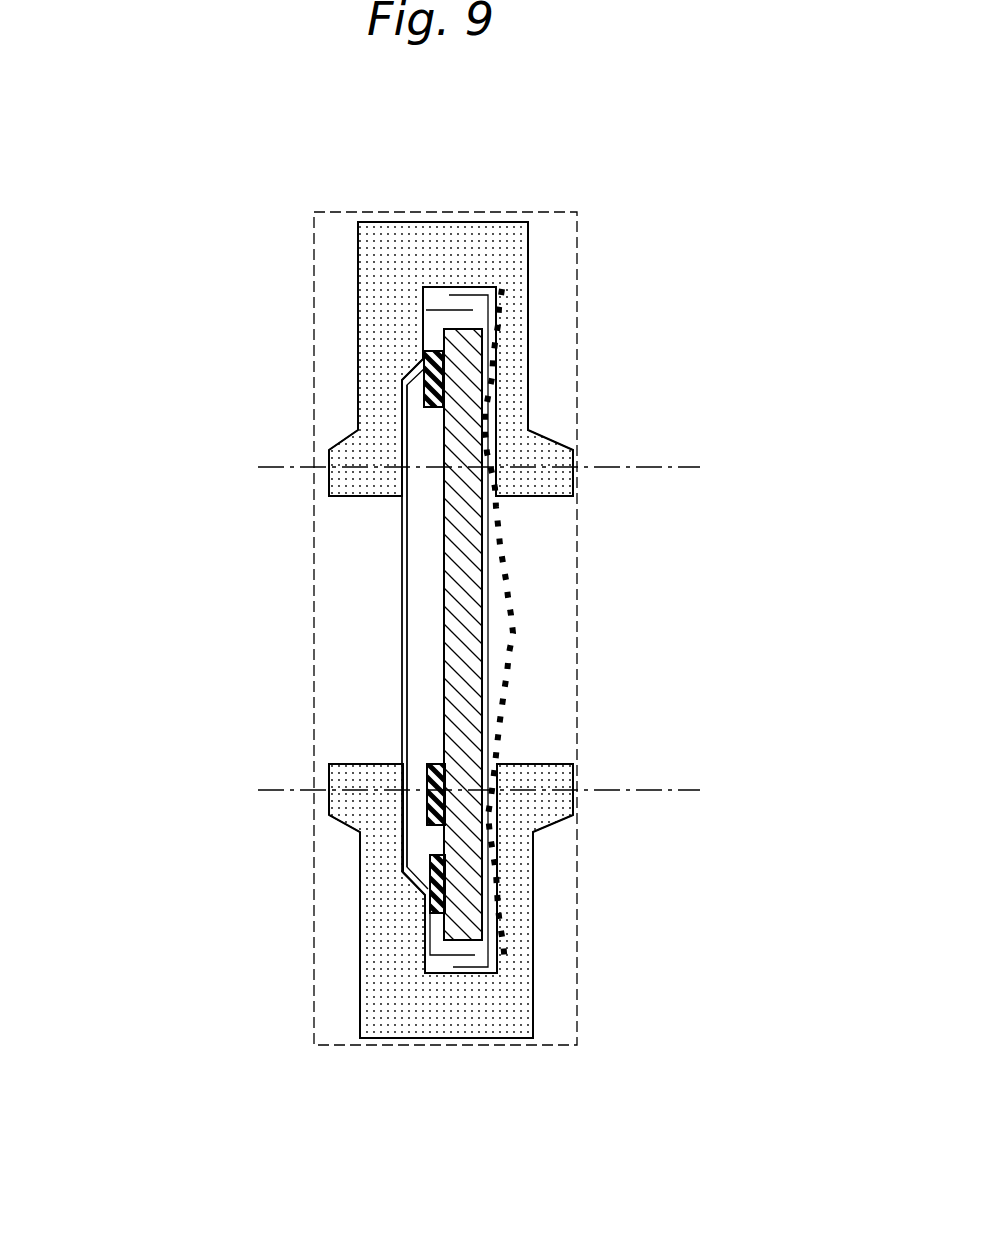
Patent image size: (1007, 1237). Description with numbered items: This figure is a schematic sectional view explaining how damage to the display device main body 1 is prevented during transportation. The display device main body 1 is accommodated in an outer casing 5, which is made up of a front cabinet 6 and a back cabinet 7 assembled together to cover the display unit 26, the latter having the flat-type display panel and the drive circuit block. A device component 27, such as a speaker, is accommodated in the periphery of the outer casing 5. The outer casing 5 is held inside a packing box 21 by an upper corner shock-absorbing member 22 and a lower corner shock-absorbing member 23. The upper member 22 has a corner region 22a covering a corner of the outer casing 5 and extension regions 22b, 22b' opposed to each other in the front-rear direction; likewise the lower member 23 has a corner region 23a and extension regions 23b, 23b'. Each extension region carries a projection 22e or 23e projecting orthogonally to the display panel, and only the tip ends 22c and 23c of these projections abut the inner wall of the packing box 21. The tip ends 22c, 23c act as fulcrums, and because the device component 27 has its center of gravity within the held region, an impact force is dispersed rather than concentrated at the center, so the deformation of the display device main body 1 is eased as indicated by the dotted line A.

The display device main body 1 is at (408, 717).
The outer casing 5 is at (408, 672).
The front cabinet 6 is at (492, 692).
The back cabinet 7 is at (408, 582).
The packing box 21 is at (314, 270).
The upper corner shock-absorbing member 22 is at (398, 235).
The corner region 22a is at (507, 230).
The extension region 22b is at (618, 391).
The extension region 22b' is at (223, 326).
The tip end 22c is at (329, 448).
The projection 22e is at (347, 442).
The lower corner shock-absorbing member 23 is at (405, 1022).
The corner region 23a is at (495, 1022).
The extension region 23b is at (622, 873).
The extension region 23b' is at (260, 939).
The tip end 23c is at (330, 770).
The projection 23e is at (350, 810).
The display unit 26 is at (470, 537).
The device component 27 is at (423, 352).
The dotted line A is at (512, 612).